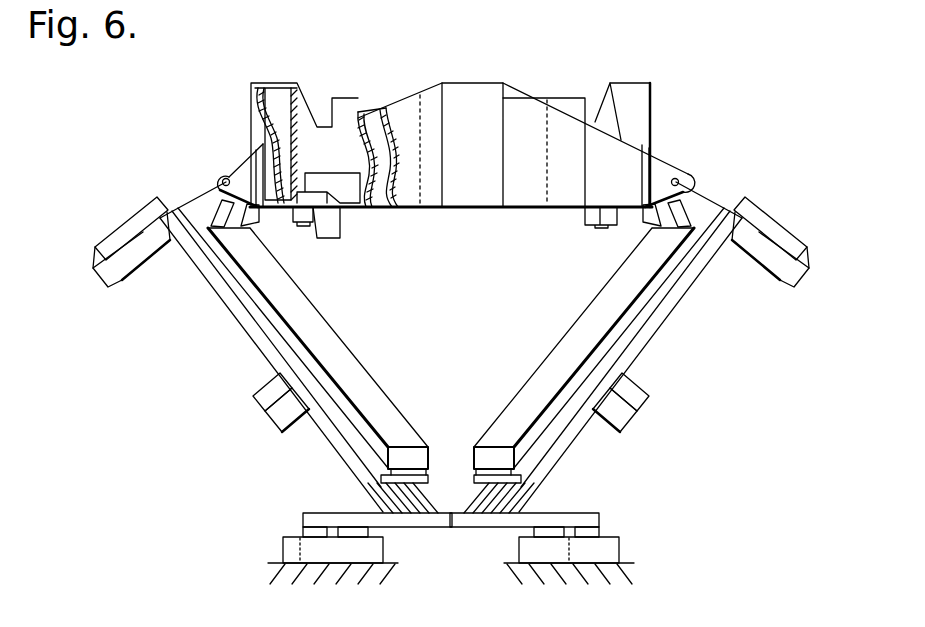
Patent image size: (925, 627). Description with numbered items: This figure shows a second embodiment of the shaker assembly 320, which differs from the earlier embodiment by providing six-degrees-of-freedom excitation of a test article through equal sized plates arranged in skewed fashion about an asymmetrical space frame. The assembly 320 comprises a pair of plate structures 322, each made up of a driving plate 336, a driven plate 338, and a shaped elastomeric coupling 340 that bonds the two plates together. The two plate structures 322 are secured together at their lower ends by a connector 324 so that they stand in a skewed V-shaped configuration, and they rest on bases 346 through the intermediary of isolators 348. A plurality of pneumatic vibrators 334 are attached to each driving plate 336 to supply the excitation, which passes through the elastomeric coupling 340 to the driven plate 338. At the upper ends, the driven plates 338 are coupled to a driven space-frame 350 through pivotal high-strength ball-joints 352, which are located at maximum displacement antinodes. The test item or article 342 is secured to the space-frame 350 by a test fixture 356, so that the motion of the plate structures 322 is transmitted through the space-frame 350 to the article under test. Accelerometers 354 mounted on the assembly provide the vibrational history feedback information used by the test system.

The shaker assembly 320 is at (553, 61).
The plate structure 322 is at (507, 353).
The connector 324 is at (465, 502).
The pneumatic vibrator 334 is at (104, 272).
The driving plate 336 is at (274, 352).
The driven plate 338 is at (322, 326).
The elastomeric coupling 340 is at (252, 311).
The test article 342 is at (355, 104).
The base 346 is at (287, 550).
The isolator 348 is at (300, 531).
The driven space-frame 350 is at (628, 156).
The ball-joint 352 is at (229, 178).
The accelerometer 354 is at (318, 228).
The test fixture 356 is at (347, 192).